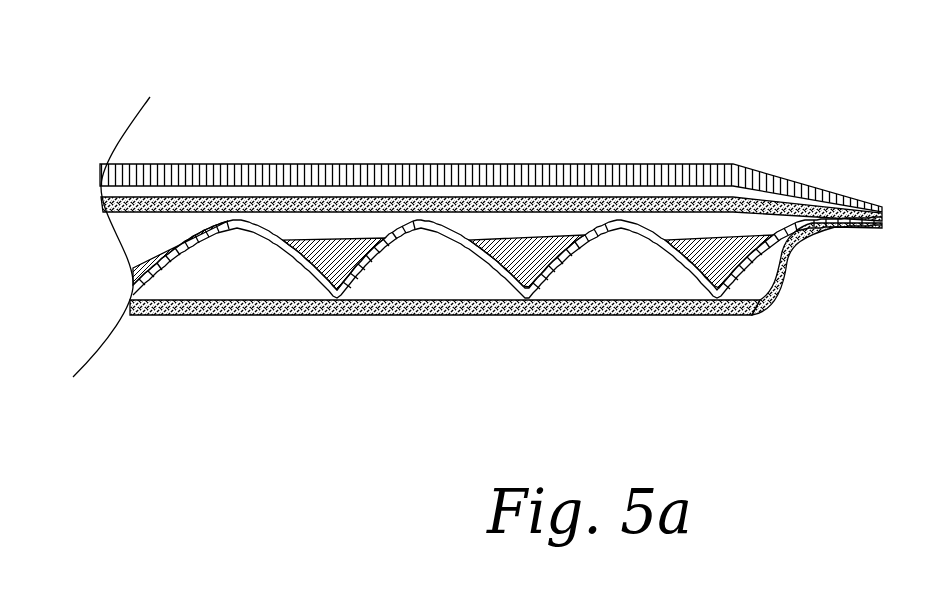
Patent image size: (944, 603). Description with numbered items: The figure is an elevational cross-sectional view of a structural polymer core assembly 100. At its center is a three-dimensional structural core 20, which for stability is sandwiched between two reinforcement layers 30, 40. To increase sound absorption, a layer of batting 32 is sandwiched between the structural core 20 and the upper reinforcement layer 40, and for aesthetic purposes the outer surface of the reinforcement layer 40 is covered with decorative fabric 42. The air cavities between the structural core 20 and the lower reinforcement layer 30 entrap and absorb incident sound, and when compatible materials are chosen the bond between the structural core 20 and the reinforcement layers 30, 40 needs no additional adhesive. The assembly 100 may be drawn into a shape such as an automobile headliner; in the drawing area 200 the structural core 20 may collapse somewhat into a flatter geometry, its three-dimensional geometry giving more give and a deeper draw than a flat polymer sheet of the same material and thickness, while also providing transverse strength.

The structural polymer core assembly 100 is at (103, 80).
The decorative fabric 42 is at (213, 164).
The reinforcement layer 40 is at (100, 203).
The layer of batting 32 is at (133, 273).
The structural core 20 is at (133, 291).
The reinforcement layer 30 is at (204, 316).
The drawing area 200 is at (800, 242).